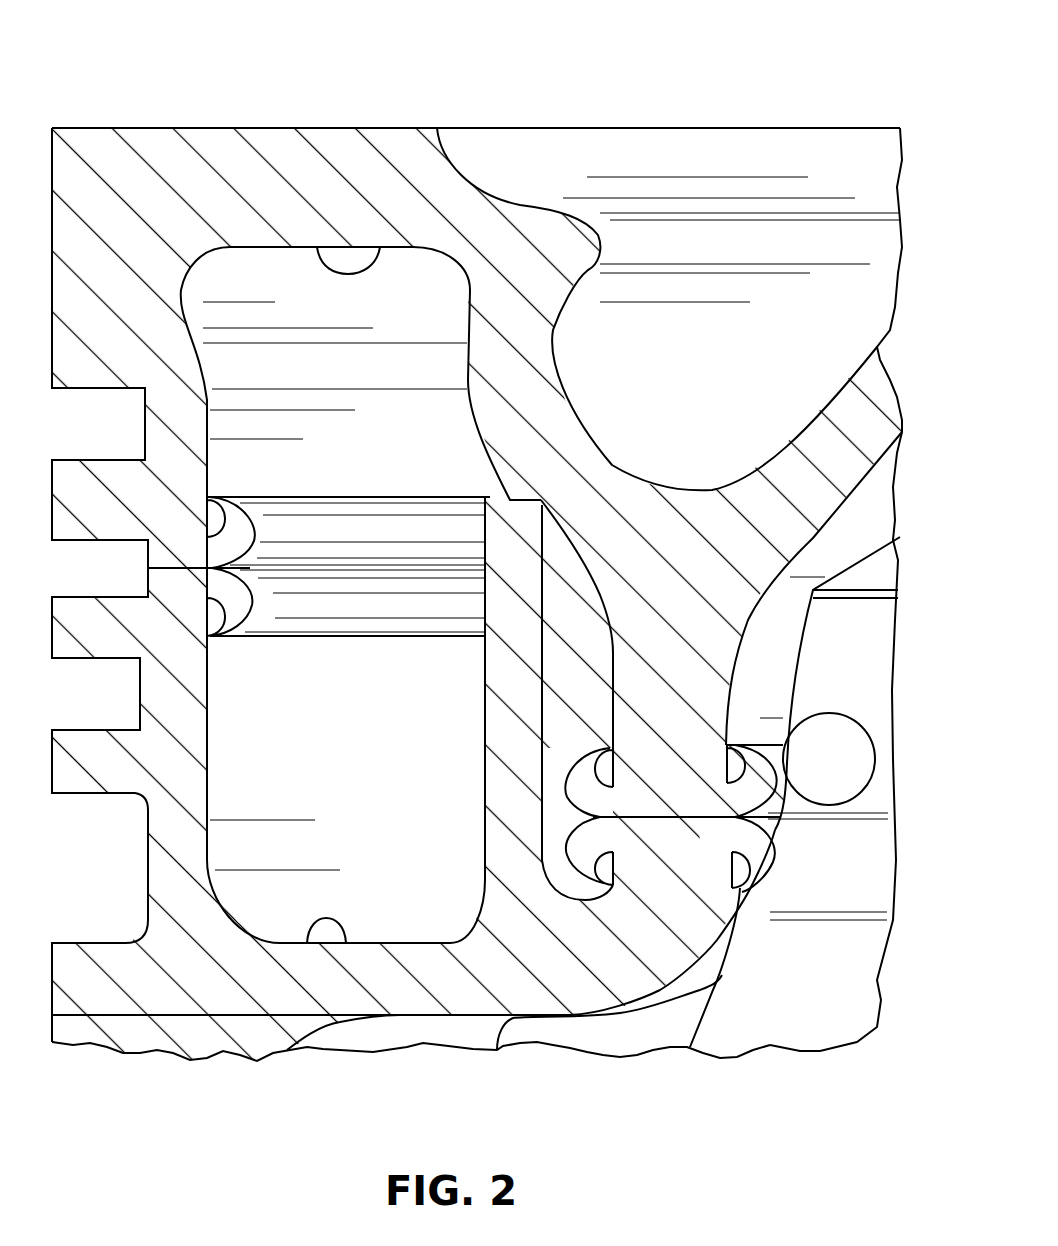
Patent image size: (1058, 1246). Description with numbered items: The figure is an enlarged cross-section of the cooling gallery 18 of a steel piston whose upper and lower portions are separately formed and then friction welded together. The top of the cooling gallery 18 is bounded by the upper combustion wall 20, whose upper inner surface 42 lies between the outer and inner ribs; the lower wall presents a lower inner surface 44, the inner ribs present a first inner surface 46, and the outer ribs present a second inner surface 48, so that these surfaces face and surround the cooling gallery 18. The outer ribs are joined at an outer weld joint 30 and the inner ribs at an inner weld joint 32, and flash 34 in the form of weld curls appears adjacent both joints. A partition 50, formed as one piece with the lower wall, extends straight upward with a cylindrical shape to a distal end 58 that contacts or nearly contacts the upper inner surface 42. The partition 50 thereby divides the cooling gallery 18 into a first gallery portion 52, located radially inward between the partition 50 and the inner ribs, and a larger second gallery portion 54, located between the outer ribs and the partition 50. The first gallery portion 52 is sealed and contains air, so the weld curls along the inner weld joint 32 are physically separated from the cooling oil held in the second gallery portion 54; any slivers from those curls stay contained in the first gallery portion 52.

The cooling gallery 18 is at (361, 595).
The upper combustion wall 20 is at (279, 148).
The outer weld joint 30 is at (146, 568).
The inner weld joint 32 is at (697, 818).
The flash 34 is at (235, 530).
The upper inner surface 42 is at (350, 268).
The lower inner surface 44 is at (333, 943).
The first inner surface 46 is at (492, 457).
The second inner surface 48 is at (207, 727).
The partition 50 is at (506, 792).
The first gallery portion 52 is at (573, 595).
The second gallery portion 54 is at (241, 782).
The distal end 58 is at (492, 502).